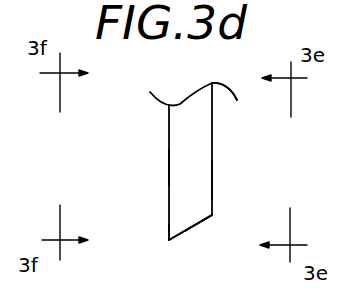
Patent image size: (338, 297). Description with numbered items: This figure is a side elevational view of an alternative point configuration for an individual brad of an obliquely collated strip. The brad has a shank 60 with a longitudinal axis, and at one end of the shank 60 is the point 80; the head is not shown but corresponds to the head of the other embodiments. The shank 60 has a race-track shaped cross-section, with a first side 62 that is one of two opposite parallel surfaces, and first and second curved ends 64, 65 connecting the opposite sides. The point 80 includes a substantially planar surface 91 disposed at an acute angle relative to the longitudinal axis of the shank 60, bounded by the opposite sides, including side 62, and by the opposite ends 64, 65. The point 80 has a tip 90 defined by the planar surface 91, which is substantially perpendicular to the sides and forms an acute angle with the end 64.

The shank 60 is at (167, 128).
The first side 62 is at (199, 187).
The first curved end 64 is at (169, 167).
The second curved end 65 is at (212, 128).
The point 80 is at (223, 210).
The tip 90 is at (169, 240).
The substantially planar surface 91 is at (197, 225).